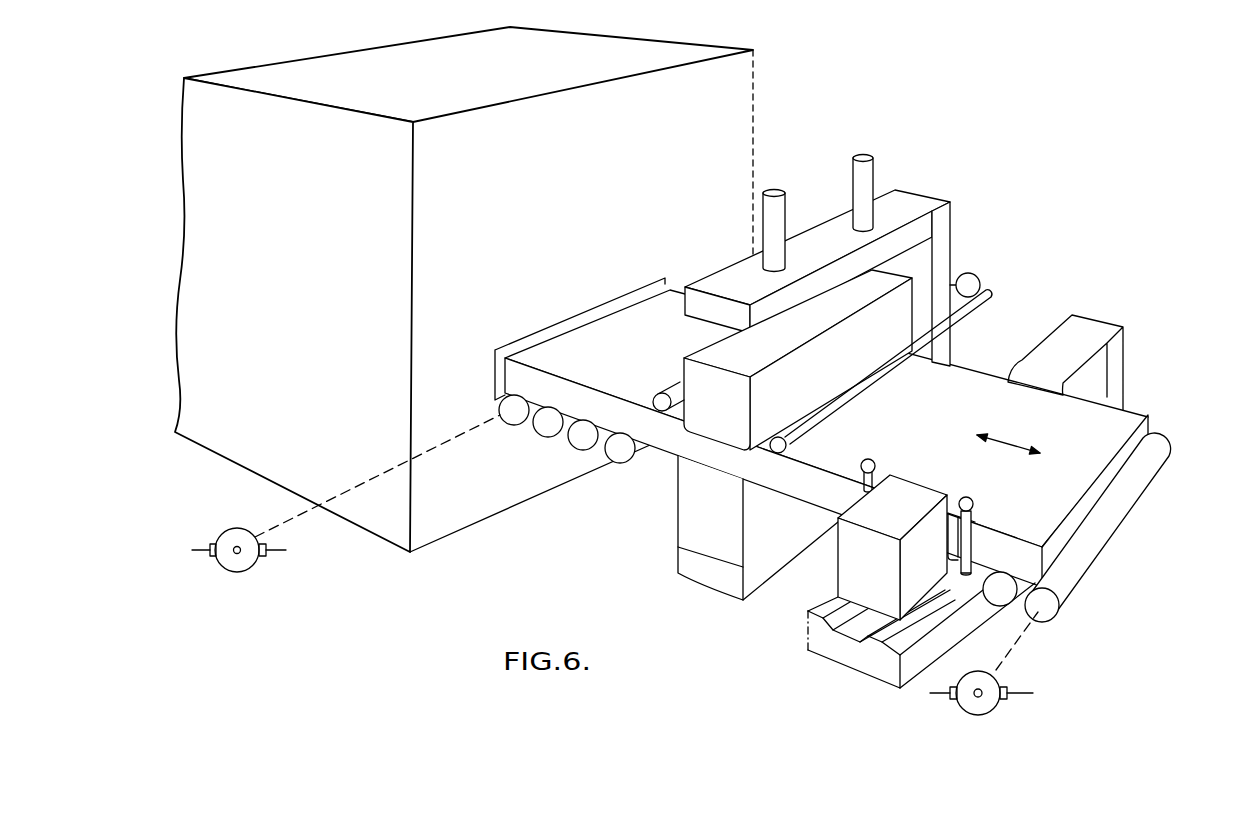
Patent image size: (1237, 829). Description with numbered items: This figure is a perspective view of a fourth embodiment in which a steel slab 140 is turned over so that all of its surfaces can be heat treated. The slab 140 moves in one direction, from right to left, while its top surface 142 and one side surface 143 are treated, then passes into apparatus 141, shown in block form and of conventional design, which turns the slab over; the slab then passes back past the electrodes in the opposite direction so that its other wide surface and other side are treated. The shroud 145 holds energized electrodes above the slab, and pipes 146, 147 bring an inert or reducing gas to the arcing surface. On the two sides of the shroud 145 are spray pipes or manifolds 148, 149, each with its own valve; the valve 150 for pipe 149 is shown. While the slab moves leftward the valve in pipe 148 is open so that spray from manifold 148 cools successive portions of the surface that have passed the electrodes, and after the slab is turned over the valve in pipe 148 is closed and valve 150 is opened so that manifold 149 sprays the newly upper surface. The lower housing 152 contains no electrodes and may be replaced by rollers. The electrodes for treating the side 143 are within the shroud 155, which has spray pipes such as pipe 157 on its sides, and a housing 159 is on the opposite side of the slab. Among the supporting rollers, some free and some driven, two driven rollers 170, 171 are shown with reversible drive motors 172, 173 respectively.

The slab 140 is at (1130, 415).
The apparatus for turning the slab over 141 is at (303, 256).
The top surface of the slab 142 is at (1090, 462).
The side surface of the slab 143 is at (1012, 560).
The shroud 145 is at (713, 351).
The pipe 146 is at (787, 196).
The pipe 147 is at (873, 164).
The spray pipe or manifold 148 is at (677, 383).
The spray pipe or manifold 149 is at (880, 375).
The valve 150 is at (975, 276).
The lower housing 152 is at (688, 507).
The shroud 155 is at (843, 572).
The spray pipe 157 is at (974, 506).
The housing 159 is at (1042, 355).
The driven roller 170 is at (523, 408).
The driven roller 171 is at (1100, 527).
The reversible drive motor 172 is at (253, 566).
The reversible drive motor 173 is at (968, 710).